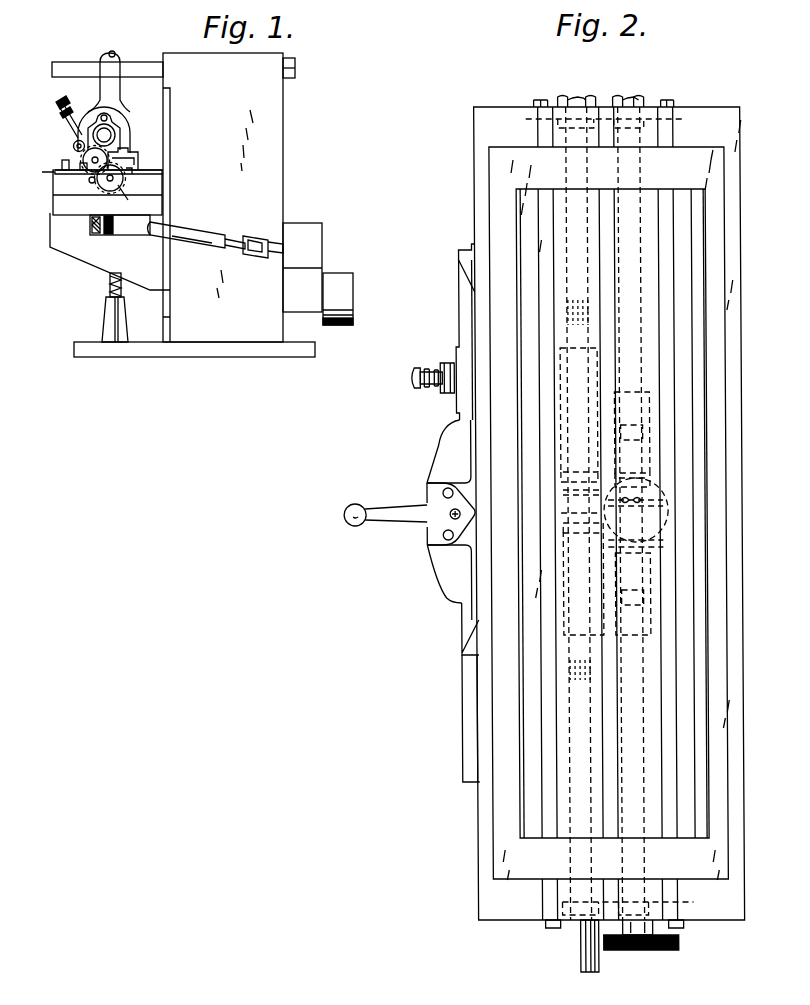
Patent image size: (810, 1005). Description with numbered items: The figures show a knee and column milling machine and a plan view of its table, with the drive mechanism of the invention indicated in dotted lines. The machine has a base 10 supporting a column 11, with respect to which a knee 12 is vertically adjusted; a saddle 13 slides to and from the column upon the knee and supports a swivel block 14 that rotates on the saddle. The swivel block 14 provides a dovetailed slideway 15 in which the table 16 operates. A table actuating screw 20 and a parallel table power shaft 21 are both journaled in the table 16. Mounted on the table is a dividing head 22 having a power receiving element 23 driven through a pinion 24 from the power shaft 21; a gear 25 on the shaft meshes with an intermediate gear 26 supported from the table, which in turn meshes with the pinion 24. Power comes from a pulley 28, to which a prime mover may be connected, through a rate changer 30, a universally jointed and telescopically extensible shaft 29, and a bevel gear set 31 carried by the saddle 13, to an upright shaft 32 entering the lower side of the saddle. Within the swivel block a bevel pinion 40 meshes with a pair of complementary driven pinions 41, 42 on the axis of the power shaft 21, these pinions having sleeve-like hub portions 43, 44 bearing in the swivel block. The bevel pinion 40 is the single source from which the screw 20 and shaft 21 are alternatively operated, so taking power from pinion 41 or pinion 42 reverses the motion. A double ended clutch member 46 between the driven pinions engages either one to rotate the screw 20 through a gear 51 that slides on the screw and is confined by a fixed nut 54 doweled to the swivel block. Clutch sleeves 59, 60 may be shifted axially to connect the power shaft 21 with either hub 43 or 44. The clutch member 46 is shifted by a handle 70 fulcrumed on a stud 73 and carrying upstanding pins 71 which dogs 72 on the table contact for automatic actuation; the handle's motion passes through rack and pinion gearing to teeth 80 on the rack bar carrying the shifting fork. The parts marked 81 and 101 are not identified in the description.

In FIG. 1, the base 10 is at (217, 345).
In FIG. 1, the column 11 is at (283, 150).
In FIG. 1, the knee 12 is at (80, 255).
In FIG. 1, the saddle 13 is at (57, 209).
In FIG. 1, the swivel block 14 is at (122, 180).
In FIG. 2, the swivel block 14 is at (436, 572).
In FIG. 1, the dovetailed slideway 15 is at (136, 176).
In FIG. 1, the table 16 is at (138, 160).
In FIG. 2, the table 16 is at (715, 400).
In FIG. 1, the table actuating screw 20 is at (94, 183).
In FIG. 2, the table actuating screw 20 is at (575, 706).
In FIG. 1, the table power shaft 21 is at (128, 200).
In FIG. 2, the table power shaft 21 is at (640, 688).
In FIG. 1, the dividing head 22 is at (123, 128).
In FIG. 1, the power receiving element 23 is at (73, 146).
In FIG. 1, the pinion 24 is at (62, 126).
In FIG. 1, the gear 25 is at (116, 186).
In FIG. 2, the gear 25 is at (675, 942).
In FIG. 1, the intermediate gear 26 is at (104, 148).
In FIG. 1, the pulley 28 is at (348, 280).
In FIG. 1, the universally jointed and telescopically extensible shaft 29 is at (212, 235).
In FIG. 1, the rate changer 30 is at (312, 223).
In FIG. 1, the bevel gear set 31 is at (113, 228).
In FIG. 1, the upright shaft 32 is at (92, 228).
In FIG. 2, the bevel pinion 40 is at (660, 480).
In FIG. 2, the driven pinion 41 is at (653, 451).
In FIG. 2, the driven pinion 42 is at (665, 548).
In FIG. 2, the sleeve-like hub portion 43 is at (655, 432).
In FIG. 2, the sleeve-like hub portion 44 is at (660, 580).
In FIG. 2, the double ended clutch member 46 is at (665, 508).
In FIG. 2, the gear 51 is at (546, 520).
In FIG. 2, the thrust member 54 is at (560, 408).
In FIG. 2, the clutch sleeve 59 is at (650, 393).
In FIG. 2, the clutch sleeve 60 is at (650, 618).
In FIG. 1, the handle 70 is at (44, 172).
In FIG. 2, the handle 70 is at (390, 519).
In FIG. 1, the upstanding pins 71 is at (62, 166).
In FIG. 2, the upstanding pins 71 is at (440, 492).
In FIG. 1, the dogs 72 is at (80, 162).
In FIG. 2, the dogs 72 is at (462, 258).
In FIG. 2, the stud 73 is at (447, 514).
In FIG. 2, the teeth 80 is at (445, 366).
In FIG. 2, the bolt 81 is at (420, 368).
In FIG. 1, the lug 101 is at (140, 165).